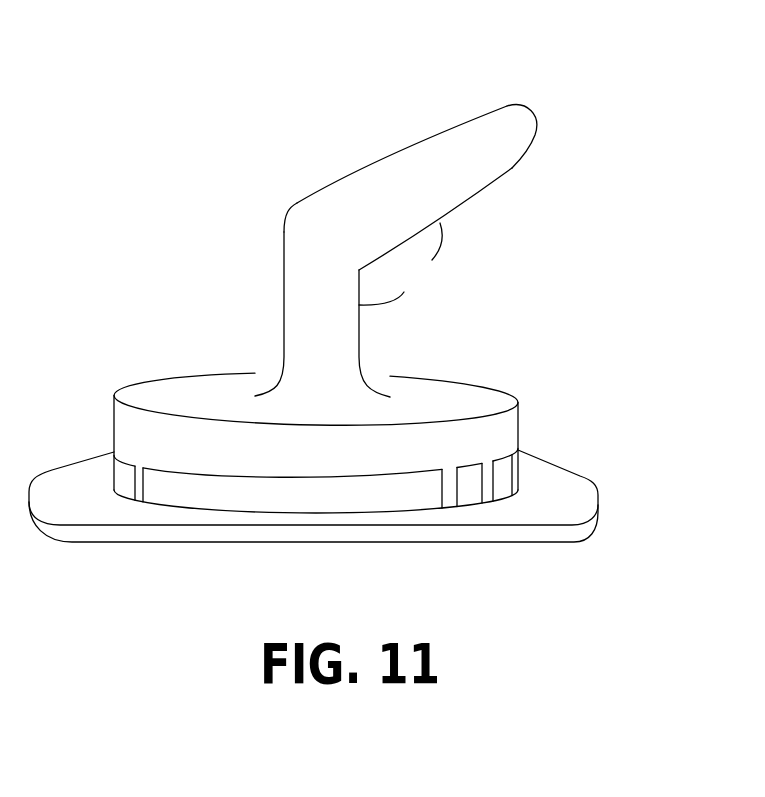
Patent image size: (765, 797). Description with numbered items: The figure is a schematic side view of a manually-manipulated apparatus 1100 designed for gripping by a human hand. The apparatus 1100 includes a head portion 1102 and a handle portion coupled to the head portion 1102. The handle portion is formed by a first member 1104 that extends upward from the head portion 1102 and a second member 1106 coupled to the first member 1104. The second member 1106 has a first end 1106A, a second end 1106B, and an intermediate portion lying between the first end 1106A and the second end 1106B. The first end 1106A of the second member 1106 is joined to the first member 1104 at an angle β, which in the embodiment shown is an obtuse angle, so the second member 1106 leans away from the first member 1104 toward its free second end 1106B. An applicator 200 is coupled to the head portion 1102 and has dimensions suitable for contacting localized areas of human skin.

The apparatus 1100 is at (562, 65).
The applicator 200 is at (542, 480).
The head portion 1102 is at (493, 385).
The first member 1104 is at (357, 343).
The second member 1106 is at (373, 157).
The first end 1106A is at (296, 205).
The second end 1106B is at (532, 147).